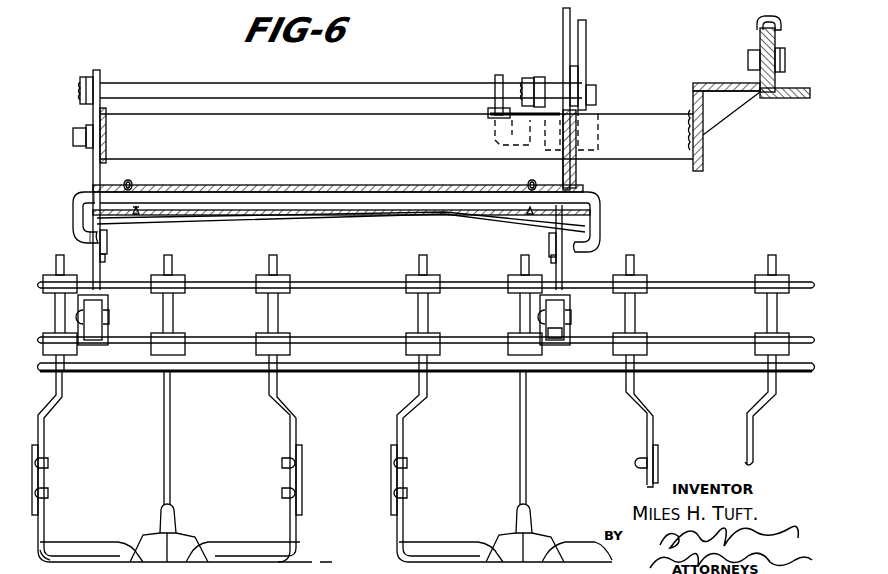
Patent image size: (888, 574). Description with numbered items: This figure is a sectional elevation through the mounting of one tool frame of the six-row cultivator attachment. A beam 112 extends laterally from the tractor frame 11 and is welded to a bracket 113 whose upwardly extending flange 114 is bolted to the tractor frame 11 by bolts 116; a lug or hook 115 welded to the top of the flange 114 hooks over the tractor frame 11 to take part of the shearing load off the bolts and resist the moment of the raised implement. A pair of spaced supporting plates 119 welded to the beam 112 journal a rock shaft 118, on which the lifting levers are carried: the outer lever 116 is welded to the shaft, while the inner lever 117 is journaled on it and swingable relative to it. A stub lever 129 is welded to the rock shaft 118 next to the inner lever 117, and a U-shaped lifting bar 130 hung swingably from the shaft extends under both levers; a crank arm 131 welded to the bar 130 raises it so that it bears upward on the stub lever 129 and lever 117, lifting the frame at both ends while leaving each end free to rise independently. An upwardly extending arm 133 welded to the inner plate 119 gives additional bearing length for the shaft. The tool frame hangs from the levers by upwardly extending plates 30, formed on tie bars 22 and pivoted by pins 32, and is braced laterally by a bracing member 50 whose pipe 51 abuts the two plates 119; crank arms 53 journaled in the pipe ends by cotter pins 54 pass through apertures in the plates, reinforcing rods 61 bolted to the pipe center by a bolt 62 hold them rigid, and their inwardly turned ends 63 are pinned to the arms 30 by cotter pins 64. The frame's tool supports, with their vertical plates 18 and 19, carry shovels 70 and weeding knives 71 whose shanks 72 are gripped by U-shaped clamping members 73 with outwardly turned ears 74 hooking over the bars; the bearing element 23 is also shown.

The tractor frame 11 is at (792, 98).
The vertically disposed plates 18 is at (100, 300).
The forwardly extending vertical plates 19 is at (82, 348).
The tie bars 22 is at (562, 334).
The bolt 23 is at (108, 320).
The upwardly extending plates 30 is at (93, 172).
The pins 32 is at (73, 136).
The bracing member 50 is at (214, 184).
The pipe 51 is at (376, 194).
The crank arms 53 is at (80, 212).
The cotter pin 54 is at (132, 182).
The reinforcing rods 61 is at (130, 222).
The bolt 62 is at (330, 196).
The pivot portions 63 is at (102, 232).
The cotter pins 64 is at (105, 258).
The shovels 70 is at (172, 520).
The weeding knives 71 is at (240, 548).
The shank 72 is at (258, 278).
The U-shaped clamping member 73 is at (410, 316).
The outwardly turned ear 74 is at (276, 270).
The beam 112 is at (396, 136).
The bracket 113 is at (722, 66).
The upwardly extending flange 114 is at (760, 32).
The lug or hook 115 is at (778, 28).
The bolts 116 is at (80, 95).
The inner lever 117 is at (545, 78).
The rock shaft 118 is at (396, 92).
The supporting plates 119 is at (98, 72).
The stub lever 129 is at (530, 78).
The U-shaped lifting bar 130 is at (500, 142).
The crank arm 131 is at (586, 36).
The upwardly extending arm 133 is at (565, 30).